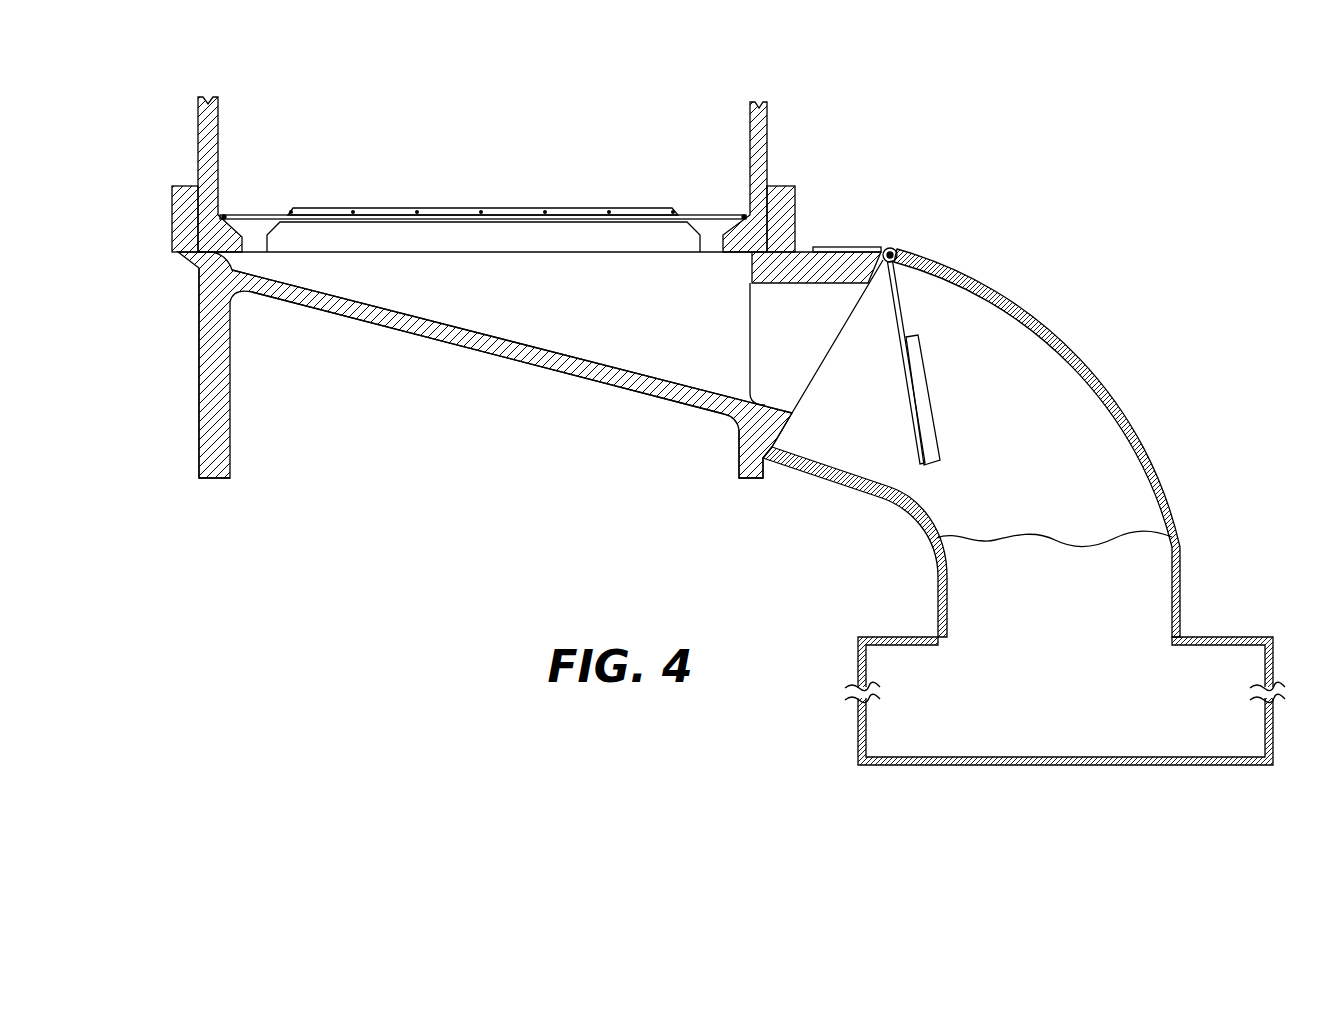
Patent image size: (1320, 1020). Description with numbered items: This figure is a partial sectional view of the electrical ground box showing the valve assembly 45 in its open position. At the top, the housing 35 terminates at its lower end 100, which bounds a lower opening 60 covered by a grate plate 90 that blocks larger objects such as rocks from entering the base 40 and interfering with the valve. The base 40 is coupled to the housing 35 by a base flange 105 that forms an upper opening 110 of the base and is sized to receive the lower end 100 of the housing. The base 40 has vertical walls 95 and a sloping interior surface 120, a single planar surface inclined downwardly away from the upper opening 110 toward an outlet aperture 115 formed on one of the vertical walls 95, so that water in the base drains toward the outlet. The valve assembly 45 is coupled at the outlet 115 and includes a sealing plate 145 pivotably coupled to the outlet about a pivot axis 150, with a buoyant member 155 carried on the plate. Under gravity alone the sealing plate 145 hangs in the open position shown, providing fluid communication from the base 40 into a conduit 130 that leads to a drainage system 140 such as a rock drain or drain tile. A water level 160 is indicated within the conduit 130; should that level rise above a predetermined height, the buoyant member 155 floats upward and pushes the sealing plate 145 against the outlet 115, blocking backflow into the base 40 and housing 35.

The housing 35 is at (768, 122).
The base 40 is at (200, 392).
The valve assembly 45 is at (967, 225).
The lower opening 60 is at (703, 197).
The grate plate 90 is at (462, 232).
The vertical walls 95 is at (218, 455).
The lower end 100 is at (232, 215).
The base flange 105 is at (792, 205).
The upper opening 110 is at (385, 187).
The outlet aperture 115 is at (833, 265).
The sloping interior surface 120 is at (572, 357).
The conduit 130 is at (1095, 368).
The drainage system 140 is at (1115, 766).
The sealing plate 145 is at (905, 320).
The pivot axis 150 is at (893, 249).
The buoyant member 155 is at (935, 395).
The water level 160 is at (1122, 530).